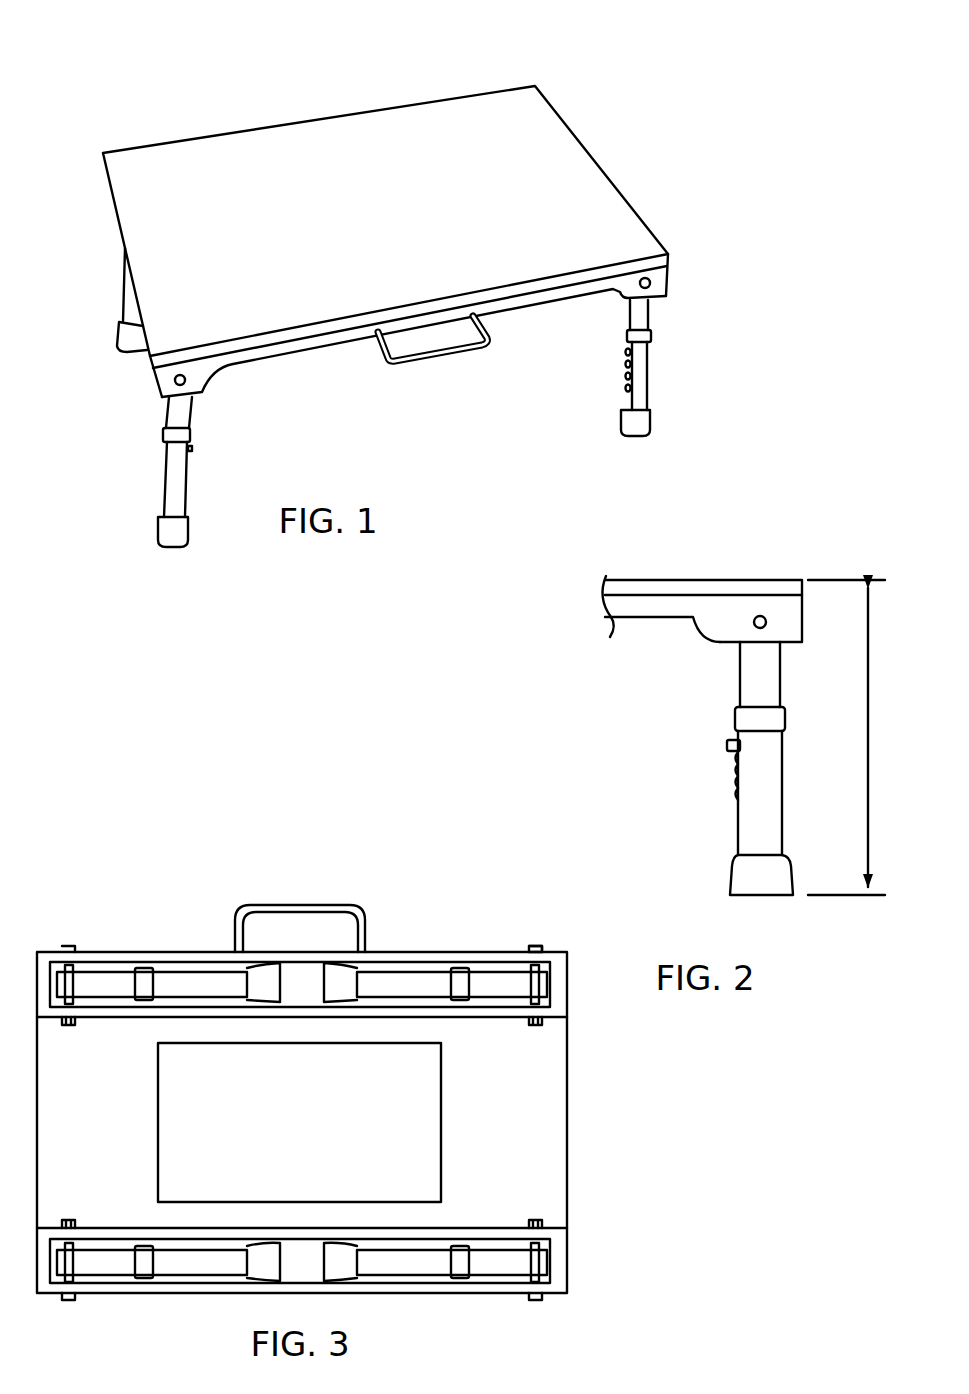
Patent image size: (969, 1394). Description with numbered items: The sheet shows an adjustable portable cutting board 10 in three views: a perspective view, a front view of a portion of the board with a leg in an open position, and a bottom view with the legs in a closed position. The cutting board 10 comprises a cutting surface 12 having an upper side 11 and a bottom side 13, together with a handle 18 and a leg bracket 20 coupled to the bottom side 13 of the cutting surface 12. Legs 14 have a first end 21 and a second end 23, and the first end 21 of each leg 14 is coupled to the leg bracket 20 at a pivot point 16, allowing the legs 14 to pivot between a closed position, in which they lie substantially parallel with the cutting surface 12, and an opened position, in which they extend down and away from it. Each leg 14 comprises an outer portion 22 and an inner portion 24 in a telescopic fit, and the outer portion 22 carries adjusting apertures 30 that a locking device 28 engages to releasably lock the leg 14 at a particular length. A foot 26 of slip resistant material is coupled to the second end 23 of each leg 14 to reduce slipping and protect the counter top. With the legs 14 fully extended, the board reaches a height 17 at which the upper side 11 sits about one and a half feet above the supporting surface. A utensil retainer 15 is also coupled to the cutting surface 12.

In FIG. 1, the adjustable portable cutting board 10 is at (675, 125).
In FIG. 2, the adjustable portable cutting board 10 is at (613, 527).
In FIG. 3, the adjustable portable cutting board 10 is at (249, 827).
In FIG. 1, the upper side 11 is at (283, 240).
In FIG. 1, the cutting surface 12 is at (300, 152).
In FIG. 2, the cutting surface 12 is at (655, 580).
In FIG. 3, the cutting surface 12 is at (537, 1172).
In FIG. 3, the bottom side 13 is at (86, 1141).
In FIG. 1, the legs 14 is at (690, 354).
In FIG. 2, the legs 14 is at (682, 725).
In FIG. 3, the legs 14 is at (433, 956).
In FIG. 3, the utensil retainer 15 is at (408, 1108).
In FIG. 1, the pivot point 16 is at (638, 281).
In FIG. 2, the pivot point 16 is at (763, 617).
In FIG. 3, the pivot point 16 is at (538, 947).
In FIG. 2, the height 17 is at (858, 737).
In FIG. 1, the handle 18 is at (386, 362).
In FIG. 3, the handle 18 is at (327, 905).
In FIG. 1, the leg bracket 20 is at (545, 305).
In FIG. 2, the leg bracket 20 is at (638, 610).
In FIG. 1, the first end 21 is at (175, 410).
In FIG. 1, the outer portion 22 is at (648, 383).
In FIG. 2, the outer portion 22 is at (778, 775).
In FIG. 1, the second end 23 is at (165, 520).
In FIG. 1, the inner portion 24 is at (640, 318).
In FIG. 2, the inner portion 24 is at (765, 672).
In FIG. 1, the foot 26 is at (640, 433).
In FIG. 2, the foot 26 is at (742, 880).
In FIG. 1, the locking device 28 is at (626, 353).
In FIG. 2, the locking device 28 is at (727, 746).
In FIG. 1, the adjusting apertures 30 is at (627, 390).
In FIG. 2, the adjusting apertures 30 is at (738, 805).